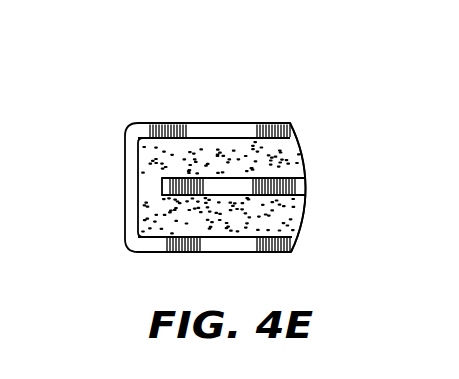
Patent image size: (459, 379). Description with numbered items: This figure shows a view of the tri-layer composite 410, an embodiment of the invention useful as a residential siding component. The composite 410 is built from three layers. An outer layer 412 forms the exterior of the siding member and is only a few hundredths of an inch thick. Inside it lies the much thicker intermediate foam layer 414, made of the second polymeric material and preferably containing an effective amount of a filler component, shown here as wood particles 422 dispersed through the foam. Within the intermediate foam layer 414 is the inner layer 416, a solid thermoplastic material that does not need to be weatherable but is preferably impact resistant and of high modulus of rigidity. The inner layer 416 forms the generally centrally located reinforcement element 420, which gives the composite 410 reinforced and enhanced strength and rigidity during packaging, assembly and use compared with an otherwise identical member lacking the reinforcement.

The tri-layer composite 410 is at (138, 108).
The outer layer 412 is at (125, 188).
The intermediate foam layer 414 is at (178, 152).
The inner layer 416 is at (190, 200).
The reinforcement element 420 is at (252, 193).
The wood particles 422 is at (290, 203).